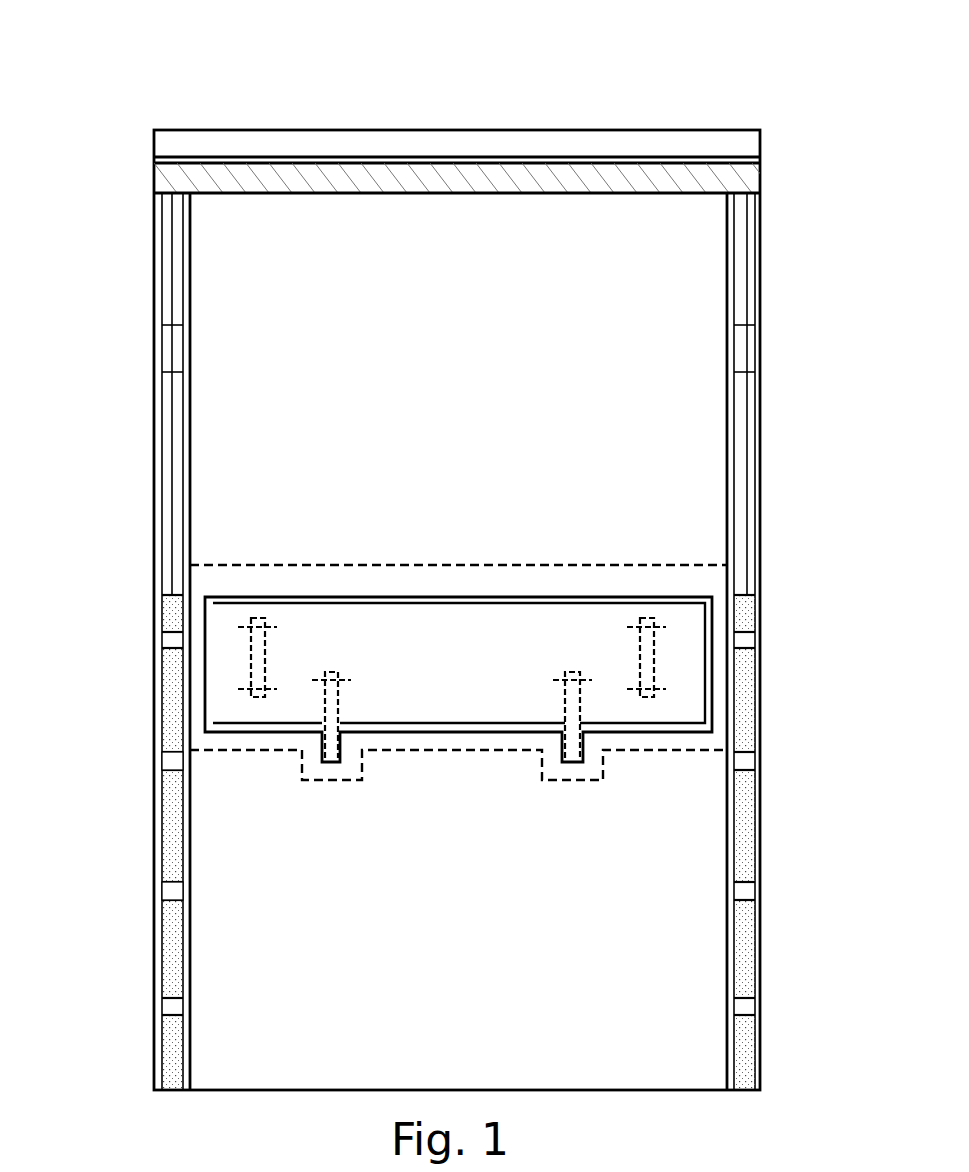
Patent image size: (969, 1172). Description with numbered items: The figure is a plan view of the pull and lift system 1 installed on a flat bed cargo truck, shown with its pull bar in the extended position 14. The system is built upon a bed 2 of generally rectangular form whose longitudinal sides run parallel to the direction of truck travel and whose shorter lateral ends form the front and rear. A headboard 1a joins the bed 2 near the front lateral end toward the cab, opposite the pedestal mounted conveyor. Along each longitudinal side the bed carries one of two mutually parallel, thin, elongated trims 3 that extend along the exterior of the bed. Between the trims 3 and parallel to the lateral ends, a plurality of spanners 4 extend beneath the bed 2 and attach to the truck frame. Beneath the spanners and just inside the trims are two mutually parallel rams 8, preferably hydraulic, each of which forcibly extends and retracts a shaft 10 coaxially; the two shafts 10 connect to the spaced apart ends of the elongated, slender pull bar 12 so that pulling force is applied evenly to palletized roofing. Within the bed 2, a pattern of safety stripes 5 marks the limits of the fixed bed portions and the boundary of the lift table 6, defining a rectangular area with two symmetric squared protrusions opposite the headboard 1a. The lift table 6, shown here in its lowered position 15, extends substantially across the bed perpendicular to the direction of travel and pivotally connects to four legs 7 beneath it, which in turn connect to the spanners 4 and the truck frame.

The pull and lift system 1 is at (640, 62).
The headboard 1a is at (632, 129).
The bed 2 is at (645, 332).
The trims 3 is at (762, 432).
The spanners 4 is at (172, 895).
The safety stripes 5 is at (670, 742).
The lift table 6 is at (225, 648).
The legs 7 is at (262, 640).
The rams 8 is at (172, 692).
The shaft 10 is at (178, 392).
The pull bar 12 is at (350, 178).
The extended position 14 is at (265, 183).
The lowered position 15 is at (437, 674).